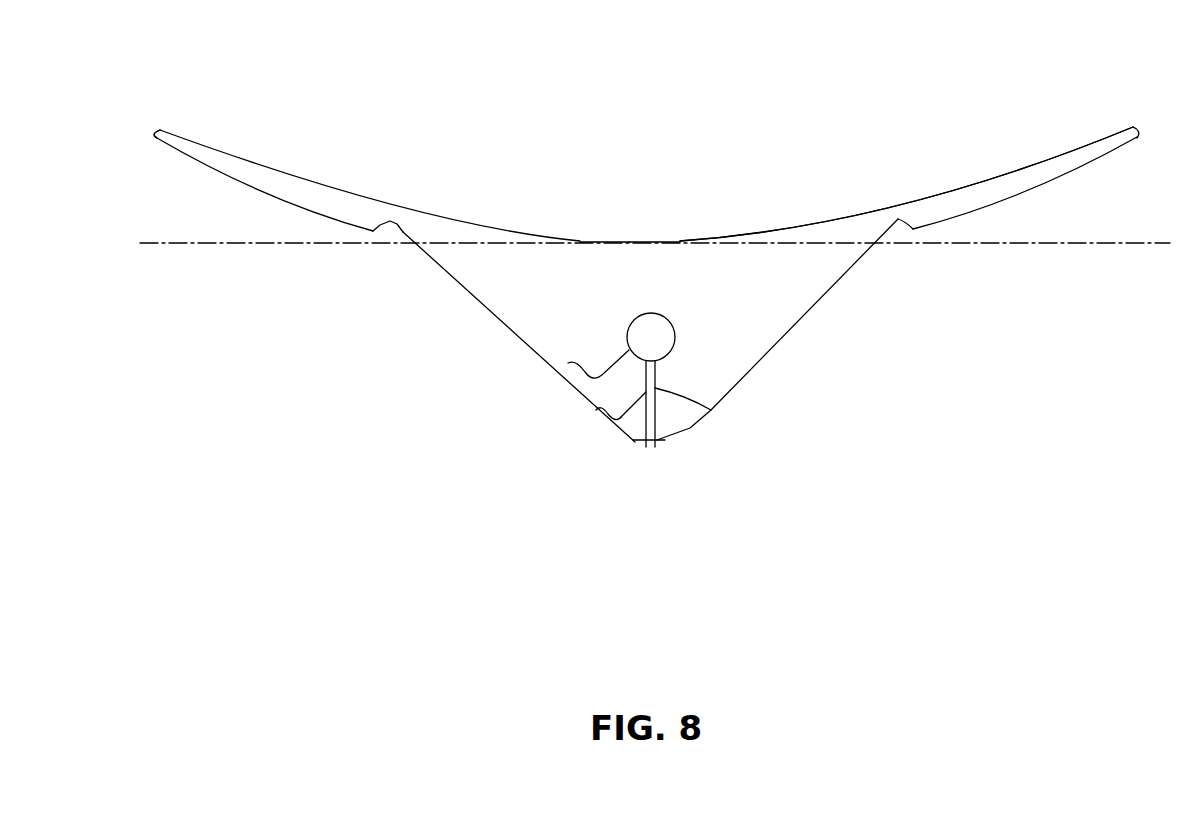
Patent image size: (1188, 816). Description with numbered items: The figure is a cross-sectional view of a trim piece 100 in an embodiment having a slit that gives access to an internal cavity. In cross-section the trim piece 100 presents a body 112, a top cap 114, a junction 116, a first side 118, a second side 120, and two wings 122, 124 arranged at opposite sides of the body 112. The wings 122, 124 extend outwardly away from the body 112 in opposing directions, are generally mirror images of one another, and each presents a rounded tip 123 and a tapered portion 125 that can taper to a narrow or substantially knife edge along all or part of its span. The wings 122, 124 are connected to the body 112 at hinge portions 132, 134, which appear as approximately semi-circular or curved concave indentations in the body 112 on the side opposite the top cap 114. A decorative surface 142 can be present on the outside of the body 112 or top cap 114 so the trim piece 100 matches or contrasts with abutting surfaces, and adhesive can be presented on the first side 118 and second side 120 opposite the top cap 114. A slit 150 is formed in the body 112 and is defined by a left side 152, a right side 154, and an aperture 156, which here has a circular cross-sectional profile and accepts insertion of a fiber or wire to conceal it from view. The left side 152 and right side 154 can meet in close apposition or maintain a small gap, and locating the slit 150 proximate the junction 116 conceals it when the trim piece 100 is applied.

The trim piece 100 is at (428, 92).
The body 112 is at (605, 207).
The top cap 114 is at (674, 201).
The junction 116 is at (629, 483).
The first side 118 is at (519, 337).
The second side 120 is at (804, 314).
The wing 122 is at (906, 167).
The rounded tip 123 is at (158, 137).
The wing 124 is at (367, 164).
The tapered portion 125 is at (647, 193).
The hinge portion 132 is at (889, 270).
The hinge portion 134 is at (379, 269).
The decorative surface 142 is at (906, 184).
The slit 150 is at (655, 429).
The left side 152 is at (596, 410).
The right side 154 is at (690, 431).
The aperture 156 is at (568, 363).